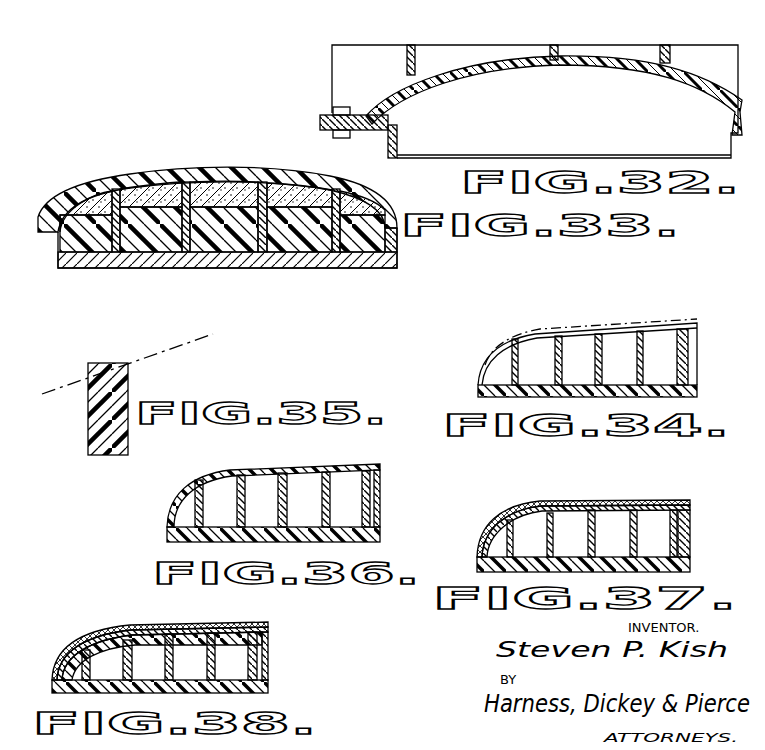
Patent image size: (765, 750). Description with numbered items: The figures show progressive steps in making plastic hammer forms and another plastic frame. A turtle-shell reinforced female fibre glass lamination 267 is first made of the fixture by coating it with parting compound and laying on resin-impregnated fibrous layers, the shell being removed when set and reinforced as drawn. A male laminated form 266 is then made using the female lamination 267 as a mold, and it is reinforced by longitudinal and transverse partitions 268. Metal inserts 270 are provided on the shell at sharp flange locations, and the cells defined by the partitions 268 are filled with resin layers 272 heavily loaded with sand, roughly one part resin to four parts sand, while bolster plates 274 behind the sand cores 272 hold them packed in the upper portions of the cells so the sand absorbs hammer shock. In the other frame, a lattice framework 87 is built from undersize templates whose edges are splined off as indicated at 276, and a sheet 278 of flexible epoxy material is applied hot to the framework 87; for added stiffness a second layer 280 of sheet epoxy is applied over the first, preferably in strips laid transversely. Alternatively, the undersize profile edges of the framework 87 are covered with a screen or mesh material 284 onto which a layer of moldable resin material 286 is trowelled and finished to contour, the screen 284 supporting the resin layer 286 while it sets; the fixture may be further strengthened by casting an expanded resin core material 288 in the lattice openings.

In FIG. 32, the reinforced female fibre glass lamination 267 is at (698, 68).
In FIG. 33, the male laminated form 266 is at (379, 197).
In FIG. 33, the partitions 268 is at (266, 222).
In FIG. 33, the metal inserts 270 is at (46, 233).
In FIG. 33, the resin layers 272 is at (150, 192).
In FIG. 33, the bolster plates 274 is at (163, 243).
In FIG. 35, the splined edges 276 is at (90, 365).
In FIG. 36, the sheet of flexible epoxy material 278 is at (265, 474).
In FIG. 37, the sheet of flexible epoxy material 278 is at (508, 520).
In FIG. 37, the second layer of sheet epoxy resin 280 is at (592, 506).
In FIG. 38, the screen or mesh material 284 is at (264, 633).
In FIG. 38, the moldable resin material 286 is at (97, 633).
In FIG. 38, the expanded resin core material 288 is at (184, 628).
In FIG. 34, the lattice framework 87 is at (703, 346).
In FIG. 36, the lattice framework 87 is at (387, 504).
In FIG. 37, the lattice framework 87 is at (697, 528).
In FIG. 38, the lattice framework 87 is at (276, 658).